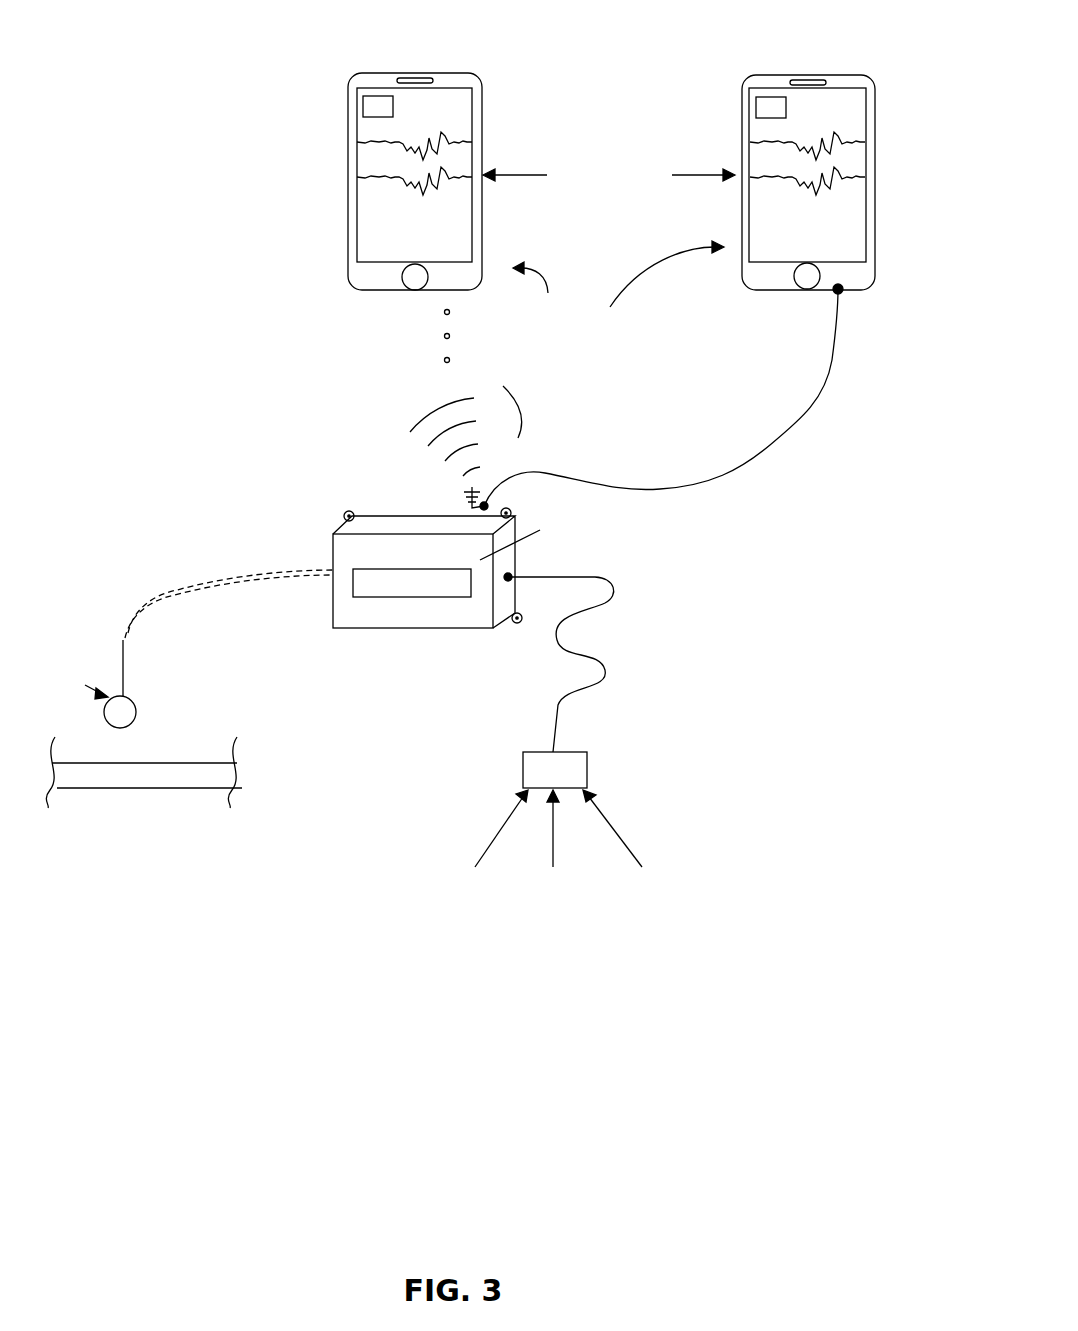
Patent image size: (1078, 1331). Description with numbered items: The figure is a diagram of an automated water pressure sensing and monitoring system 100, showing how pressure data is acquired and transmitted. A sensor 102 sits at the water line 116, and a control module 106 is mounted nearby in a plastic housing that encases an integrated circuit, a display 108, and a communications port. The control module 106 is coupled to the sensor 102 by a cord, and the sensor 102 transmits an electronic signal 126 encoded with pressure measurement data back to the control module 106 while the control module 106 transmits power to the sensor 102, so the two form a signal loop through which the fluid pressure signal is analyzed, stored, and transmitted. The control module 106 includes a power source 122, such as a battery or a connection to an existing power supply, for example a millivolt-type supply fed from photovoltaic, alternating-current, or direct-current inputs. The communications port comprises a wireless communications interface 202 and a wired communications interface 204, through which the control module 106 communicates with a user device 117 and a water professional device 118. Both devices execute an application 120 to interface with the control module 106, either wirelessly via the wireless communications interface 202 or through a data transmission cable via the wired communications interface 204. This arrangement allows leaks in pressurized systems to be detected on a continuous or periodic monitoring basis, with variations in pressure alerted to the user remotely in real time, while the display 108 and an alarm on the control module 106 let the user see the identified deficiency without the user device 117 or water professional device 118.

The automated water pressure sensing and monitoring system 100 is at (99, 61).
The user device 117 is at (411, 73).
The water professional device 118 is at (805, 75).
The application 120 is at (590, 260).
The wireless communications interface 202 is at (457, 498).
The control module 106 is at (387, 516).
The display 108 is at (373, 583).
The wired communications interface 204 is at (486, 505).
The sensor 102 is at (122, 697).
The electronic signal 126 is at (215, 598).
The water line 116 is at (120, 793).
The power source 122 is at (570, 752).